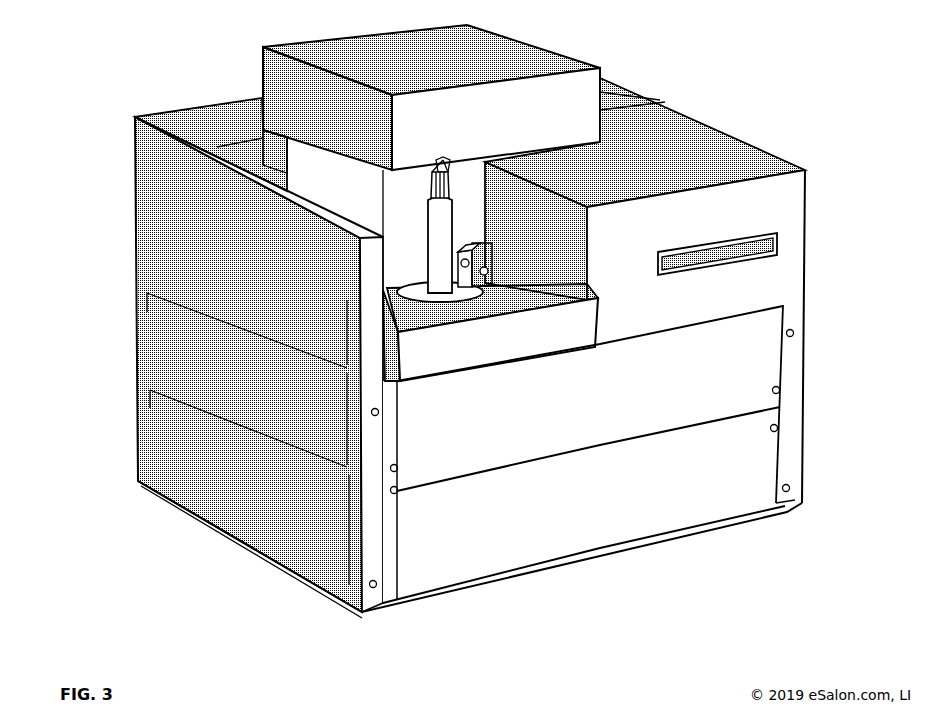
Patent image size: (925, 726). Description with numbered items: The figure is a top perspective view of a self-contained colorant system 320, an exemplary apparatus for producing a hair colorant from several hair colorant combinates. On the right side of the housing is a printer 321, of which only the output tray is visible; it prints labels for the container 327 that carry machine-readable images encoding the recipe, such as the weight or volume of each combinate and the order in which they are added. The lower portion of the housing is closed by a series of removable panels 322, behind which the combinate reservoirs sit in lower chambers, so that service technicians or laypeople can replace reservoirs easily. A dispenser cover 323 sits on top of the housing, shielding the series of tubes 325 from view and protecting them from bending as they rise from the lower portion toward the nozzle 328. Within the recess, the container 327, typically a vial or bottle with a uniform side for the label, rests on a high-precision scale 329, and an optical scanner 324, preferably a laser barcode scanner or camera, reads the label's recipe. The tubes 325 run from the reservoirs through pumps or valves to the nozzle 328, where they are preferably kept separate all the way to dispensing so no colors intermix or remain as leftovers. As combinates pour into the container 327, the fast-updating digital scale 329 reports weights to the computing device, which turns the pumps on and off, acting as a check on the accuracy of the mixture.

The self-contained colorant system 320 is at (171, 54).
The printer 321 is at (776, 256).
The removable panels 322 is at (120, 293).
The dispenser cover 323 is at (543, 49).
The optical scanner 324 is at (486, 243).
The series of tubes 325 is at (490, 160).
The container 327 is at (441, 222).
The nozzle 328 is at (432, 185).
The high-precision scale 329 is at (450, 303).